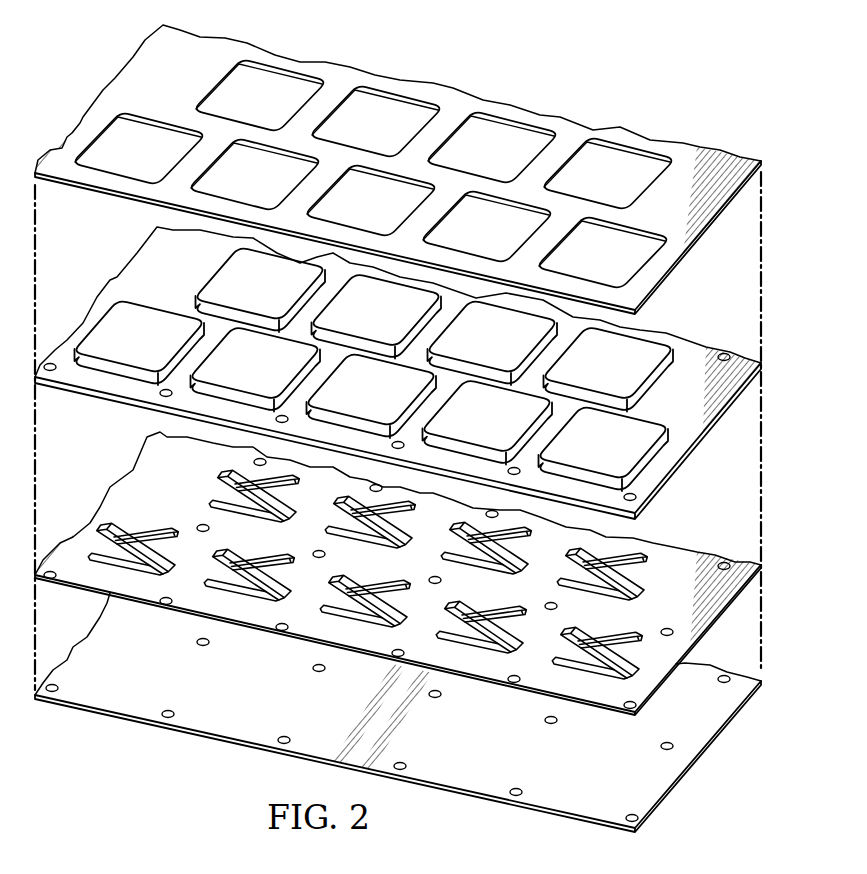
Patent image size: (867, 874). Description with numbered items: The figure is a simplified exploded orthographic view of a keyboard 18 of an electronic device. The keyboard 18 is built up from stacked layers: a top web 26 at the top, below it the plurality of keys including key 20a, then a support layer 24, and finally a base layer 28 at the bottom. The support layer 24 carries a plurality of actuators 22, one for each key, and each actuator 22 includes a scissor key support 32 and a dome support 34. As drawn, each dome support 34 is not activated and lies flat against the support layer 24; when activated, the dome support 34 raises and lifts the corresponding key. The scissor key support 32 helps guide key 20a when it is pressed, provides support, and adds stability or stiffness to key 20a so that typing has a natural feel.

The keyboard 18 is at (580, 84).
The top web 26 is at (132, 73).
The key 20a is at (213, 283).
The support layer 24 is at (130, 477).
The plurality of actuators 22 is at (367, 561).
The scissor key support 32 is at (147, 528).
The dome support 34 is at (134, 568).
The base layer 28 is at (685, 663).